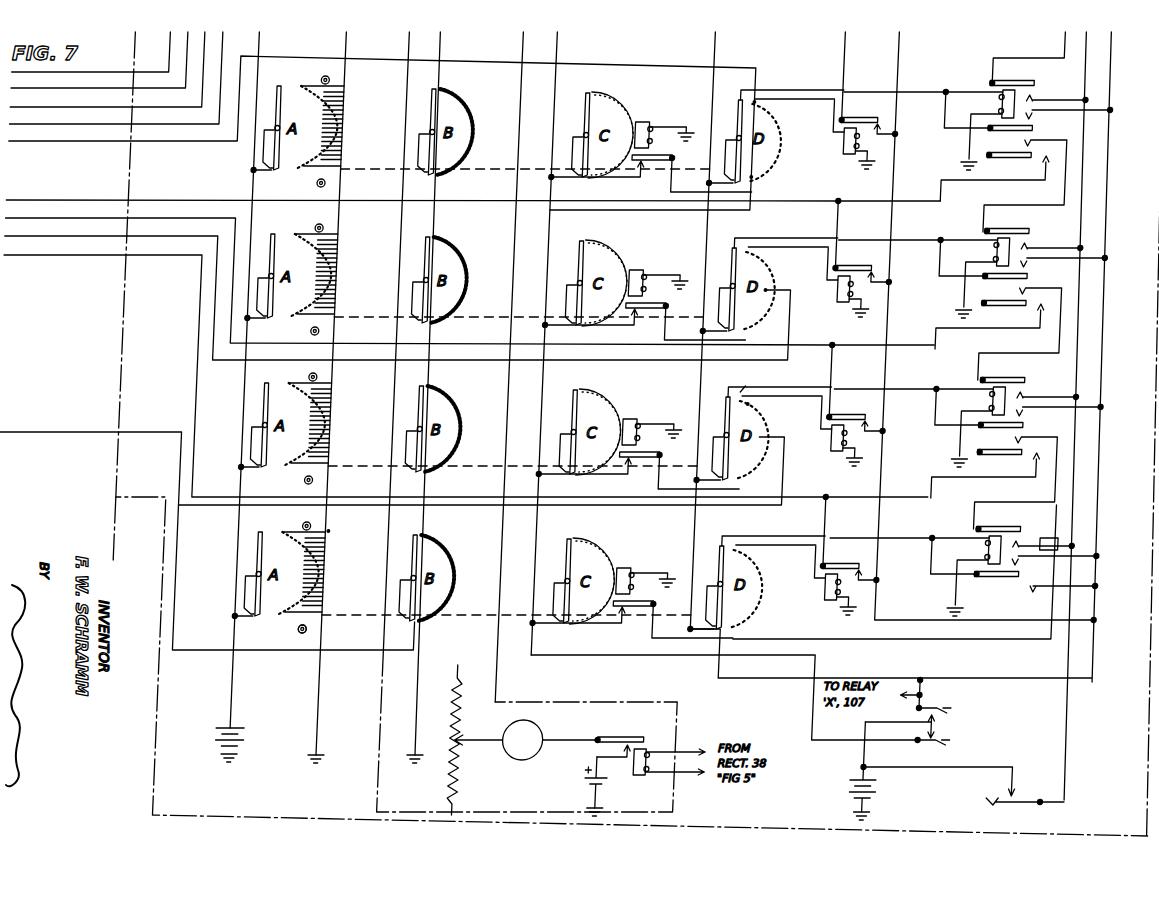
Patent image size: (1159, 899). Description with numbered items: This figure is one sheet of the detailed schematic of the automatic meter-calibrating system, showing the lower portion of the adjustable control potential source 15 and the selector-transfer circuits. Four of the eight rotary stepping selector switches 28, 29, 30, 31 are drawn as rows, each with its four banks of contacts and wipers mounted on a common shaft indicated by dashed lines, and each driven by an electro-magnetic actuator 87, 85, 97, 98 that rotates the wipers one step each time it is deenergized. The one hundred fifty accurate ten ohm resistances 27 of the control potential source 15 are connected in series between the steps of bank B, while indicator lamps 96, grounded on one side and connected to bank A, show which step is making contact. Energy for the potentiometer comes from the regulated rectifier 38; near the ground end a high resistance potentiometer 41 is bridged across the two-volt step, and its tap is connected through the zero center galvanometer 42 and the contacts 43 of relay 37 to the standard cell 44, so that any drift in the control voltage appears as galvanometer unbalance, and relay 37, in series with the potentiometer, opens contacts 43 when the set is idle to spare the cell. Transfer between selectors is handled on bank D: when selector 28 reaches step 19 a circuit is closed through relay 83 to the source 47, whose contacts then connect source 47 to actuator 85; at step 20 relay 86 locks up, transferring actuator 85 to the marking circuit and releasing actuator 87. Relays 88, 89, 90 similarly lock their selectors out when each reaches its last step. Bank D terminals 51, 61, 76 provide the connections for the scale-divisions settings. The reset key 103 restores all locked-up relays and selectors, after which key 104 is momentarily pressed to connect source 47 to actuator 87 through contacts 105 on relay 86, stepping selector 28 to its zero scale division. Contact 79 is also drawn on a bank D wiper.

The automatic selector switch 31 is at (575, 125).
The automatic selector switch 30 is at (569, 273).
The automatic selector switch 29 is at (551, 428).
The automatic selector switch 28 is at (486, 577).
The electro-magnetic actuator 98 is at (693, 146).
The electro-magnetic actuator 97 is at (686, 294).
The electro-magnetic actuator 85 is at (680, 442).
The electro-magnetic actuator 87 is at (674, 592).
The lock-out relay 90 is at (977, 132).
The lock-out relay 89 is at (971, 305).
The lock-out relay 88 is at (966, 454).
The lock-up relay 86 is at (963, 572).
The transfer relay 83 is at (838, 580).
The contacts of relay 86 105 is at (1066, 542).
The indicator lamps 96 is at (316, 631).
The ten ohm resistances 27 is at (464, 662).
The high resistance potentiometer 41 is at (478, 731).
The zero center galvanometer 42 is at (557, 730).
The contacts of relay 37 43 is at (632, 736).
The relay 37 is at (650, 773).
The standard cell 44 is at (585, 786).
The adjustable control potential source 15 is at (610, 690).
The step 19 is at (120, 328).
The reset key 103 is at (933, 717).
The source 47 is at (878, 771).
The key 104 is at (963, 797).
The terminal 76 is at (750, 104).
The terminal 61 is at (747, 179).
The terminal 51 is at (760, 290).
The contact 79 is at (737, 390).
The regulated rectifier 38 is at (742, 406).
The step 20 is at (333, 535).